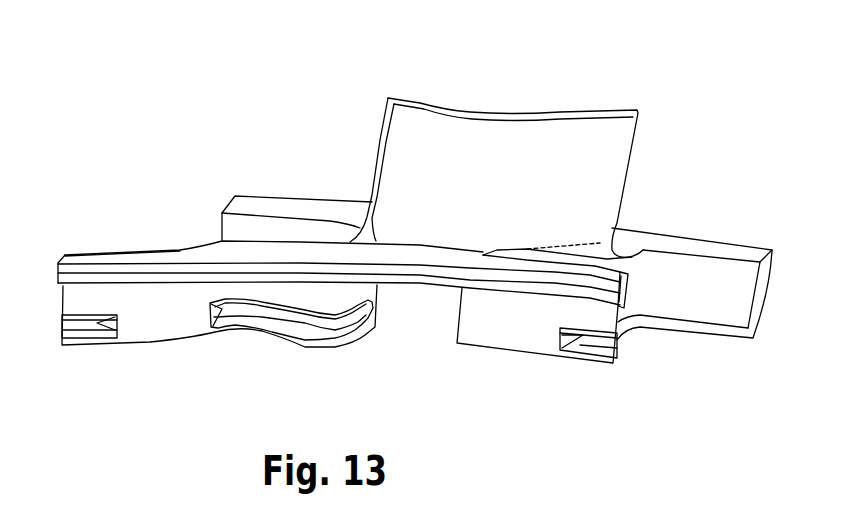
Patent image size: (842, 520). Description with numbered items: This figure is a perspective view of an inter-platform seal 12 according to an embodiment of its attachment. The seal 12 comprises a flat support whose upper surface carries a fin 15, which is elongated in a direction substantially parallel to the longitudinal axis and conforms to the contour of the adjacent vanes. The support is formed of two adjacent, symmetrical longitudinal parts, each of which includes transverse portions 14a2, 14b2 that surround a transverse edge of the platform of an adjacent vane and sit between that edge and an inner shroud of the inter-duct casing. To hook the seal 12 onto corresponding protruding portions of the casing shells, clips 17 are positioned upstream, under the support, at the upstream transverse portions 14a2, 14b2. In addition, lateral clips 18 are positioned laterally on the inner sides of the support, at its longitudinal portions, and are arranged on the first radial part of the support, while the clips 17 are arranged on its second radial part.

The inter-platform seal 12 is at (355, 58).
The transverse portion 14a2 is at (113, 257).
The transverse portion 14b2 is at (560, 263).
The fin 15 is at (497, 160).
The clip 17 is at (82, 328).
The lateral clip 18 is at (275, 313).